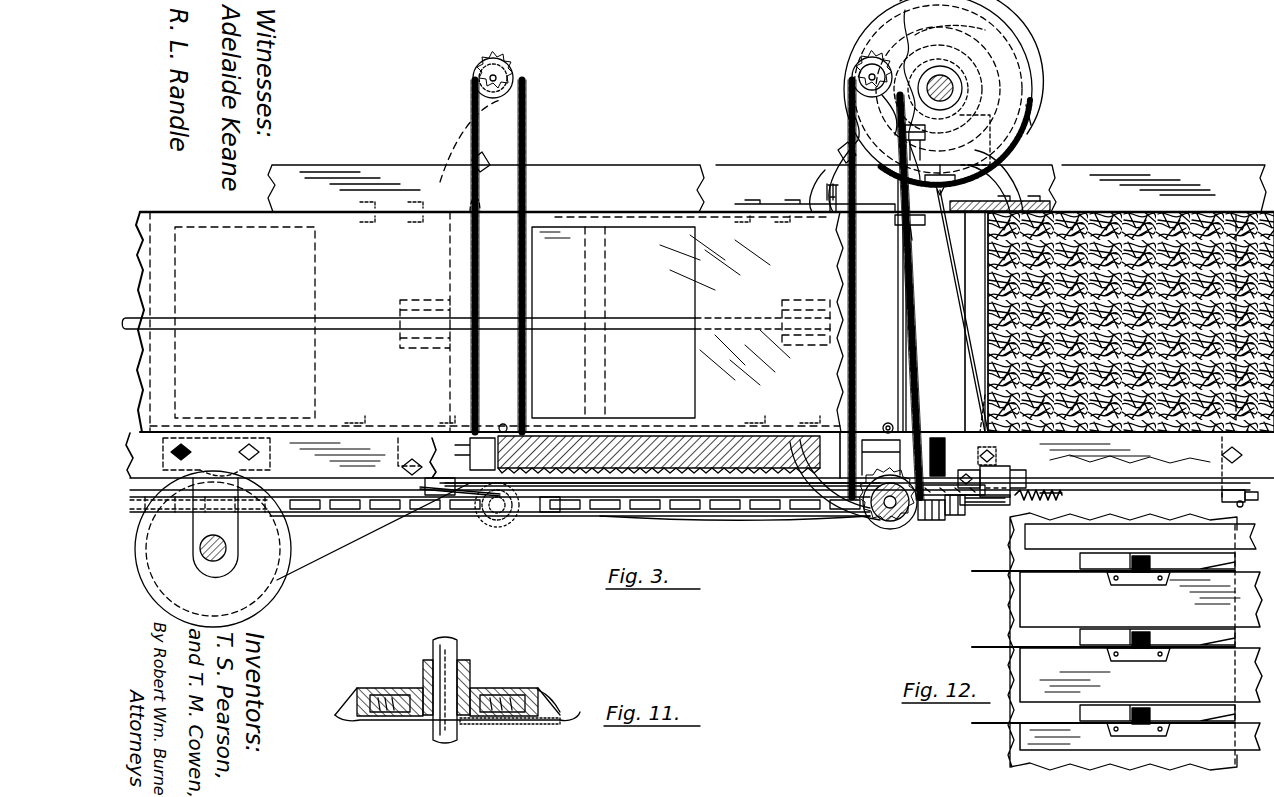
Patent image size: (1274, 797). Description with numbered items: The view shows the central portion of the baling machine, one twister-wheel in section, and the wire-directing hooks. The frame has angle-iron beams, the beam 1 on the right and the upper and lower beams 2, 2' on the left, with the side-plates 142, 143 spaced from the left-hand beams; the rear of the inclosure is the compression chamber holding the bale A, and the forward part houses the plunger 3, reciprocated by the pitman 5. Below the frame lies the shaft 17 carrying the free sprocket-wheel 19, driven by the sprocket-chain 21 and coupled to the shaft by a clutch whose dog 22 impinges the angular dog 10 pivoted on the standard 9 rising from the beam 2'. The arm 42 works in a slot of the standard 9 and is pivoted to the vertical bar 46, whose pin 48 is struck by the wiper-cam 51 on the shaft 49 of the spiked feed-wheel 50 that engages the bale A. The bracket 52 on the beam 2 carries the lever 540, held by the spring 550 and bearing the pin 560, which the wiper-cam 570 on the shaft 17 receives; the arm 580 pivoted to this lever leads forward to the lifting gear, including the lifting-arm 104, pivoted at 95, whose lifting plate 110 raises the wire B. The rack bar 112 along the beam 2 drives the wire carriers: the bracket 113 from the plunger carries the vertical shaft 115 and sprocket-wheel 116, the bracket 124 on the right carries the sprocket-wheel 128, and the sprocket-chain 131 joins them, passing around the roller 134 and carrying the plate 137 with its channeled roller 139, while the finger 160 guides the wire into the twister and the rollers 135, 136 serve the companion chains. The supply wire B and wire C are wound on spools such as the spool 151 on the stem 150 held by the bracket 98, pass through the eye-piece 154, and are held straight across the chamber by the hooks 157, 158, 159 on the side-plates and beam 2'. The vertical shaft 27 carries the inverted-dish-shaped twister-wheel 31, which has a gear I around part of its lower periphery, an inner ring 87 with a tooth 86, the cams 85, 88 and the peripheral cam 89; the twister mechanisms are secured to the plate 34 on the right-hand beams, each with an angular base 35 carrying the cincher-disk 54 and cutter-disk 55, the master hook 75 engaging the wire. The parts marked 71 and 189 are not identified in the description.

In FIG. 3, the beam 1 is at (622, 170).
In FIG. 3, the beam 2 is at (700, 455).
In FIG. 12, the beam 2 is at (1140, 536).
In FIG. 12, the beam 2' is at (1140, 736).
In FIG. 3, the plunger 3 is at (613, 322).
In FIG. 3, the pitman 5 is at (340, 318).
In FIG. 3, the standard 9 is at (1012, 472).
In FIG. 3, the angular dog 10 is at (976, 467).
In FIG. 3, the shaft 17 is at (932, 522).
In FIG. 3, the free sprocket-wheel 19 is at (1005, 503).
In FIG. 3, the sprocket-chain 21 is at (445, 512).
In FIG. 3, the dog 22 is at (925, 432).
In FIG. 3, the shaft 27 is at (950, 78).
In FIG. 11, the shaft 27 is at (447, 742).
In FIG. 3, the twister-wheel 31 is at (1005, 47).
In FIG. 11, the twister-wheel 31 is at (520, 690).
In FIG. 3, the plate 34 is at (1052, 206).
In FIG. 3, the angular base 35 is at (1005, 170).
In FIG. 3, the arm 42 is at (1160, 490).
In FIG. 3, the vertical bar 46 is at (1240, 462).
In FIG. 3, the pin 48 is at (1222, 496).
In FIG. 3, the shaft 49 is at (1243, 504).
In FIG. 3, the feed-wheel 50 is at (1251, 317).
In FIG. 3, the wiper-cam 51 is at (1256, 489).
In FIG. 3, the bracket 52 is at (990, 440).
In FIG. 3, the cincher-disk 54 is at (941, 89).
In FIG. 3, the cutter-disk 55 is at (977, 137).
In FIG. 3, the bearing 71 is at (901, 127).
In FIG. 3, the master hook 75 is at (948, 188).
In FIG. 11, the cam 85 is at (352, 722).
In FIG. 11, the tooth 86 is at (420, 722).
In FIG. 11, the ring 87 is at (388, 718).
In FIG. 11, the cam 88 is at (505, 718).
In FIG. 3, the cam 89 is at (1034, 72).
In FIG. 11, the cam 89 is at (558, 712).
In FIG. 3, the pivot 95 is at (440, 508).
In FIG. 3, the bracket 98 is at (238, 536).
In FIG. 3, the lifting-arm 104 is at (480, 470).
In FIG. 3, the lifting plate 110 is at (560, 487).
In FIG. 3, the rack bar 112 is at (659, 454).
In FIG. 3, the bracket 113 is at (840, 513).
In FIG. 3, the vertical shaft 115 is at (510, 520).
In FIG. 3, the sprocket-wheel 116 is at (500, 525).
In FIG. 3, the bracket 124 is at (466, 152).
In FIG. 3, the sprocket-wheel 128 is at (510, 66).
In FIG. 3, the sprocket-chain 131 is at (527, 130).
In FIG. 3, the roller 134 is at (501, 424).
In FIG. 12, the roller 134 is at (1140, 553).
In FIG. 12, the roller 135 is at (1148, 630).
In FIG. 12, the roller 136 is at (1138, 706).
In FIG. 3, the plate 137 is at (950, 30).
In FIG. 3, the roller 139 is at (555, 514).
In FIG. 12, the side-plate 142 is at (1141, 599).
In FIG. 12, the side-plate 143 is at (1141, 675).
In FIG. 3, the stem 150 is at (218, 558).
In FIG. 3, the spool 151 is at (268, 585).
In FIG. 3, the eye-piece 154 is at (420, 488).
In FIG. 3, the hook 157 is at (881, 457).
In FIG. 12, the hook 157 is at (1138, 585).
In FIG. 12, the hook 158 is at (1152, 660).
In FIG. 12, the hook 159 is at (1148, 737).
In FIG. 3, the finger 160 is at (920, 232).
In FIG. 3, the hub 189 is at (940, 80).
In FIG. 3, the lever 540 is at (1030, 499).
In FIG. 3, the spring 550 is at (1062, 492).
In FIG. 3, the pin 560 is at (968, 497).
In FIG. 3, the wiper-cam 570 is at (955, 518).
In FIG. 3, the arm 580 is at (750, 518).
In FIG. 3, the bale A is at (1129, 322).
In FIG. 3, the supply wire B is at (957, 334).
In FIG. 12, the supply wire B is at (995, 572).
In FIG. 12, the supply wire C is at (995, 647).
In FIG. 3, the gear I is at (1030, 116).
In FIG. 11, the gear I is at (535, 726).